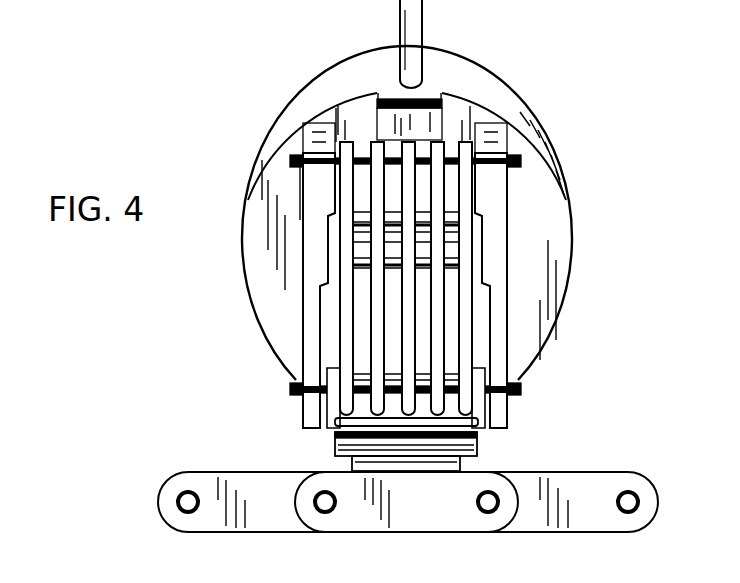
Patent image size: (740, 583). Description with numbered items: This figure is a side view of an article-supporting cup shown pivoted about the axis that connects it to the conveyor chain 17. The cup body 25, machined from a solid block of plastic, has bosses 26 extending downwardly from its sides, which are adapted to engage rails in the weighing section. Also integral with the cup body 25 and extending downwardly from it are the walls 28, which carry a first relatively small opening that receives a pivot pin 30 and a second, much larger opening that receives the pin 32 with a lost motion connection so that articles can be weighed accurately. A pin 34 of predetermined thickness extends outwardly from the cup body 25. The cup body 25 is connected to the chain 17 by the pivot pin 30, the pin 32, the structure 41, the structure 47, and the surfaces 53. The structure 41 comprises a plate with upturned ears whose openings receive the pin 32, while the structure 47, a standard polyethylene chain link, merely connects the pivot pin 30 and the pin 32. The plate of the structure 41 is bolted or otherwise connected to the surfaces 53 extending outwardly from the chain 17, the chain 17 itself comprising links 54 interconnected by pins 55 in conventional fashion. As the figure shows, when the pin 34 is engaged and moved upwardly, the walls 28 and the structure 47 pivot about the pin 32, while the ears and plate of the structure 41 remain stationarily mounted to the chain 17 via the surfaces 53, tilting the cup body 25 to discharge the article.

The chain 17 is at (408, 497).
The cup body 25 is at (513, 104).
The bosses 26 is at (388, 97).
The walls 28 is at (311, 203).
The pivot pin 30 is at (285, 163).
The pin (pivot rod) 32 is at (285, 383).
The pin 34 is at (416, 27).
The structure (mounting structure) 41 is at (494, 434).
The structure (connecting chain link) 47 is at (340, 122).
The surfaces 53 is at (364, 443).
The links 54 is at (242, 480).
The pins 55 is at (323, 497).